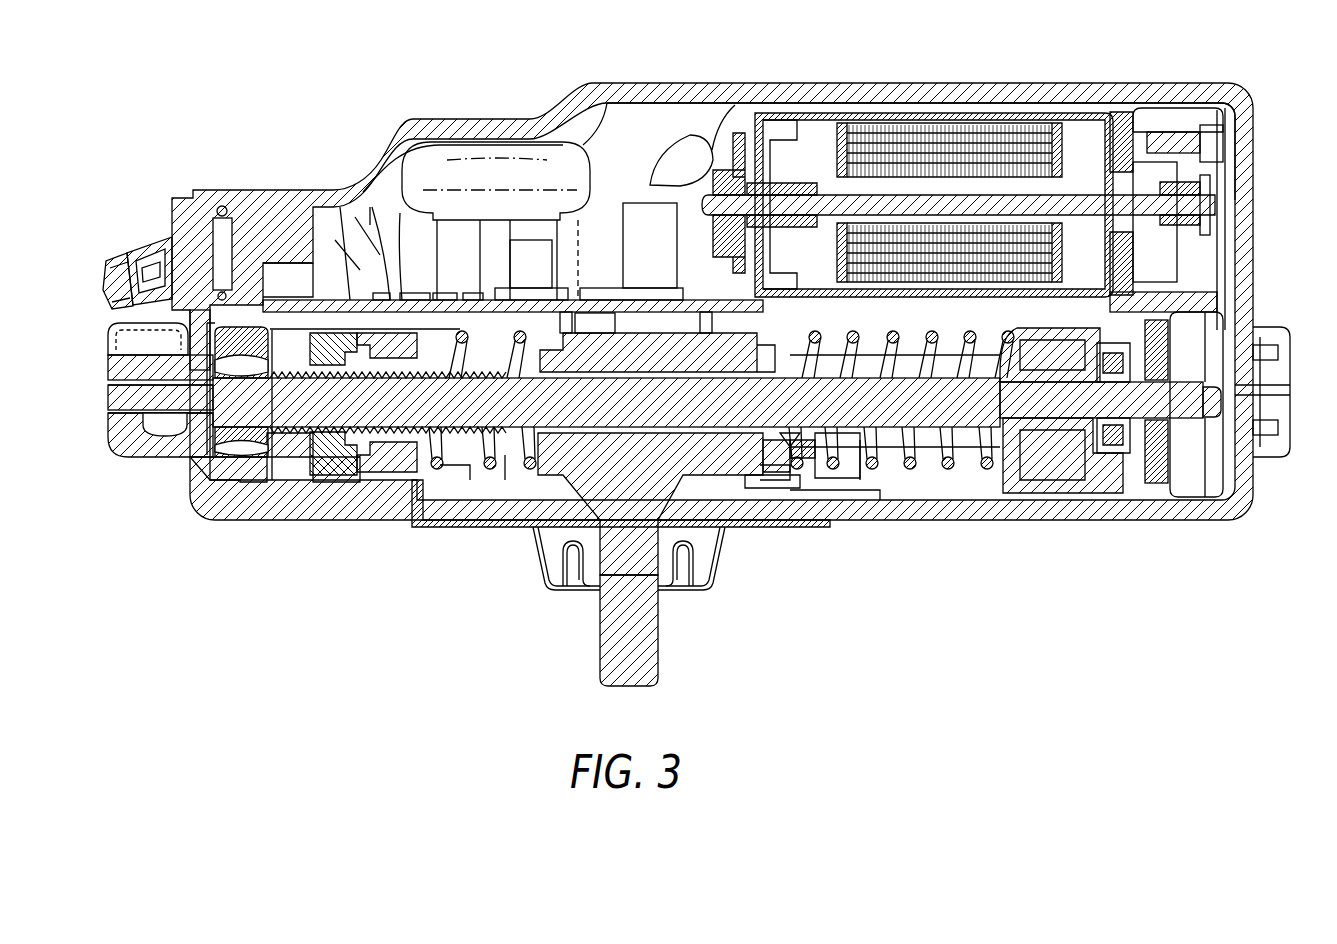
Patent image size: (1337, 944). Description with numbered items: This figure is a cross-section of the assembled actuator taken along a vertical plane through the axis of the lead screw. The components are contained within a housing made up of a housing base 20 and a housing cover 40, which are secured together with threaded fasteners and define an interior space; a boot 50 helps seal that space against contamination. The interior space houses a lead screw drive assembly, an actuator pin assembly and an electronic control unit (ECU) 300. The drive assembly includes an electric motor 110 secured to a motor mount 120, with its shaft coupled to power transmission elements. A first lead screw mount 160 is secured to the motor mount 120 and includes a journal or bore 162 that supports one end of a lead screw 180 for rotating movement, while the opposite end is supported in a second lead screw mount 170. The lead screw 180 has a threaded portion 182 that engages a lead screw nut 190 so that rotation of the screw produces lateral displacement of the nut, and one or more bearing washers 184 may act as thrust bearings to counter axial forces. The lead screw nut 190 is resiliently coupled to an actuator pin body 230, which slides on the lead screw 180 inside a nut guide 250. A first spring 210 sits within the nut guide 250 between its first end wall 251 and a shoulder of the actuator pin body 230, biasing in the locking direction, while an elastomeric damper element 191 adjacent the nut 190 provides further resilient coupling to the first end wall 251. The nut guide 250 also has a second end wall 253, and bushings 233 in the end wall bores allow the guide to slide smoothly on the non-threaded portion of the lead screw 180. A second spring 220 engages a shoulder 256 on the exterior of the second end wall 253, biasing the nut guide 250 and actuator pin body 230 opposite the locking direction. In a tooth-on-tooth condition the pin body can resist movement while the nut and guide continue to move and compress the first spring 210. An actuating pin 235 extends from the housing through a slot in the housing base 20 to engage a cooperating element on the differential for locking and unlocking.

The housing base 20 is at (1245, 508).
The housing cover 40 is at (1240, 103).
The boot 50 is at (706, 590).
The electric motor 110 is at (958, 118).
The motor mount 120 is at (1127, 262).
The first lead screw mount 160 is at (1088, 490).
The journal or bore 162 is at (1055, 432).
The second lead screw mount 170 is at (208, 506).
The lead screw 180 is at (717, 473).
The threaded portion 182 is at (278, 482).
The bearing washer 184 is at (1010, 460).
The lead screw nut 190 is at (357, 482).
The damper element 191 is at (383, 470).
The spring 210 is at (508, 500).
The spring 220 is at (950, 470).
The actuator pin body 230 is at (657, 342).
The bushing 233 is at (830, 493).
The actuating pin 235 is at (660, 640).
The nut guide 250 is at (745, 500).
The first end wall 251 is at (410, 474).
The second end wall 253 is at (762, 480).
The shoulder 256 is at (888, 500).
The electronic control unit (ECU) 300 is at (307, 255).